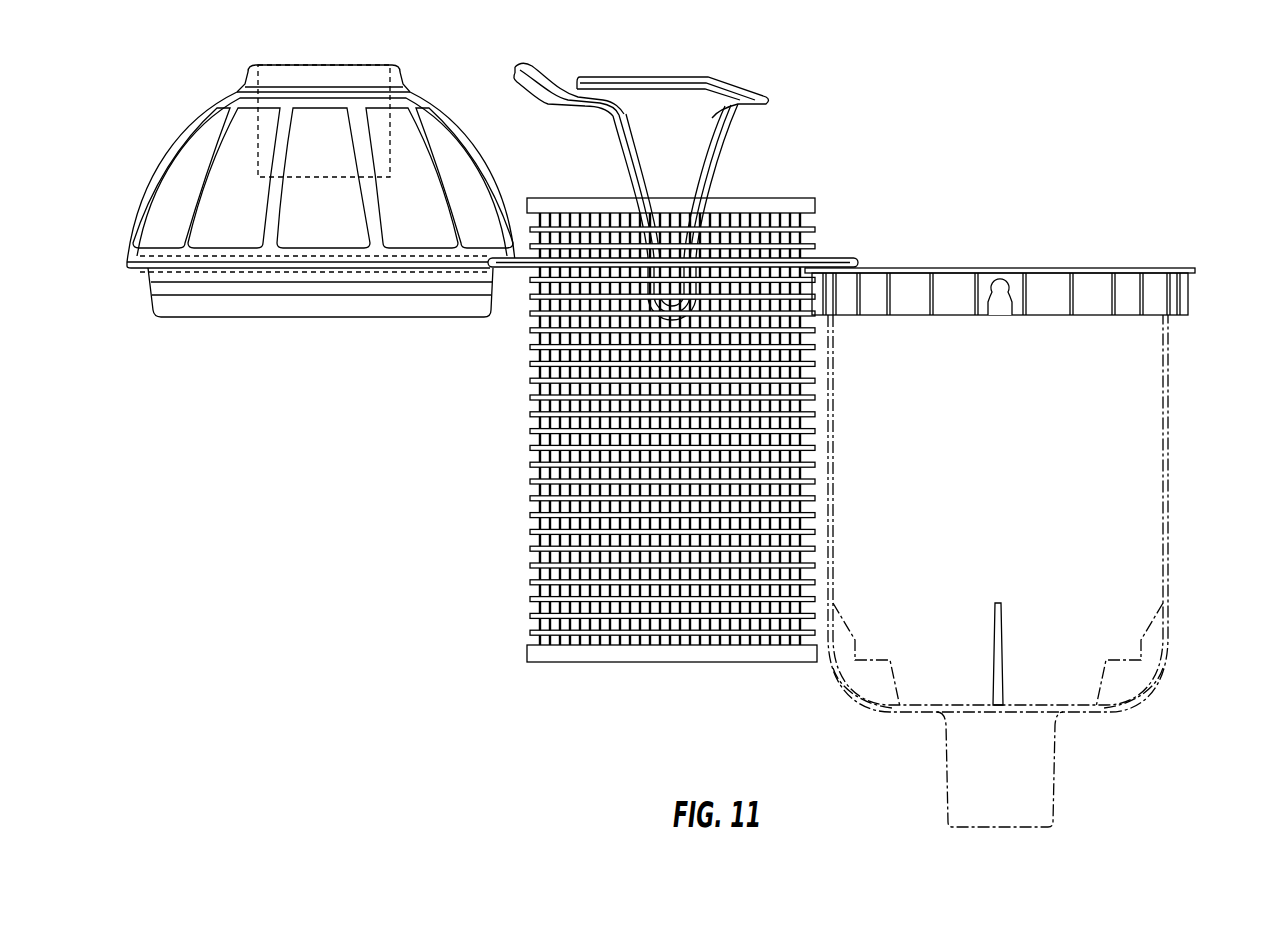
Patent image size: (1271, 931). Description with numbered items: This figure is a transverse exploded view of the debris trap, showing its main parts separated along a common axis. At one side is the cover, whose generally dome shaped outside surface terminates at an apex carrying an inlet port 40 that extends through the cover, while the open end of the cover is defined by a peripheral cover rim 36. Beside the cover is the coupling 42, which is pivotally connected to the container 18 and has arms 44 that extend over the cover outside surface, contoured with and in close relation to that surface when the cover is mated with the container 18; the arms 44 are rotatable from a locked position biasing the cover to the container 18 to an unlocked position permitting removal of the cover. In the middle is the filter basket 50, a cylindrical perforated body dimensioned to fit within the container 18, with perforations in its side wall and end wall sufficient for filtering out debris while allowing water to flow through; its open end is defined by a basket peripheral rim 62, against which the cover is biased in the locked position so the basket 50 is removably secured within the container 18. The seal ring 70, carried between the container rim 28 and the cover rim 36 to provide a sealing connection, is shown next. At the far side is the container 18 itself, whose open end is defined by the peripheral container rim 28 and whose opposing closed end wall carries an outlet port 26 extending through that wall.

The container 18 is at (1156, 387).
The outlet port 26 is at (960, 798).
The peripheral container rim 28 is at (1167, 268).
The peripheral cover rim 36 is at (148, 268).
The inlet port 40 is at (360, 64).
The coupling 42 is at (768, 75).
The arms 44 is at (695, 128).
The filter basket 50 is at (664, 404).
The basket peripheral rim 62 is at (807, 200).
The seal ring 70 is at (850, 259).